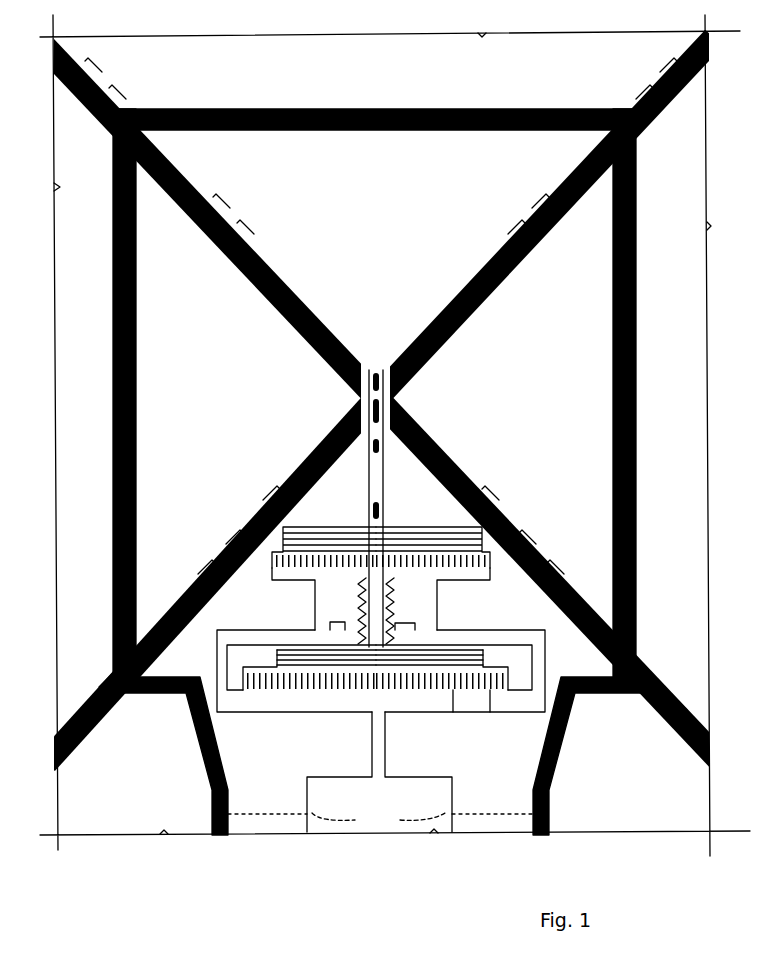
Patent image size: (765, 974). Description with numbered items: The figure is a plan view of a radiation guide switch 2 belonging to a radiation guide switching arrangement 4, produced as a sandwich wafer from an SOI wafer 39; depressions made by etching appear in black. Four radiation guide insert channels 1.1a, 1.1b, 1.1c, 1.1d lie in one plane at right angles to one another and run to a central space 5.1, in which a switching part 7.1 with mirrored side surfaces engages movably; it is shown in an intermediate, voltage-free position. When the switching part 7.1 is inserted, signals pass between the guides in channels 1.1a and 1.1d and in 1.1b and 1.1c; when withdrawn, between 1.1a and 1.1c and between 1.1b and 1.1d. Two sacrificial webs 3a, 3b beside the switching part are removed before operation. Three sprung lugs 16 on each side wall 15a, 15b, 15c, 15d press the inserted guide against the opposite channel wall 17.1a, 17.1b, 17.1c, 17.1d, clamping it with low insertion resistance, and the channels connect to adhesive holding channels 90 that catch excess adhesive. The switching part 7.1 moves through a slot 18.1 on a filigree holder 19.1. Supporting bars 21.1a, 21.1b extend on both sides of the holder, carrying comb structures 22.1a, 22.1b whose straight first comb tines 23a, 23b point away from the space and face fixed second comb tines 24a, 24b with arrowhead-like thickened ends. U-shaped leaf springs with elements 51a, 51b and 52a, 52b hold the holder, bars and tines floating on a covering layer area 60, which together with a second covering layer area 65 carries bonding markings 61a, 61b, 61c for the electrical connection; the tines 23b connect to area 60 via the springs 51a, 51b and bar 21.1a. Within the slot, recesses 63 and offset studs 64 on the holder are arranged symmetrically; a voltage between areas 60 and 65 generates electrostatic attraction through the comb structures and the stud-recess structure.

The radiation guide switch 2 is at (518, 104).
The radiation guide switching arrangement 4 is at (576, 838).
The adhesive holding channels 90 is at (565, 748).
The side wall 15a is at (170, 620).
The side wall 15b is at (588, 620).
The side wall 15c is at (566, 168).
The side wall 15d is at (197, 188).
The opposite channel wall 17.1a is at (203, 607).
The opposite channel wall 17.1b is at (550, 607).
The opposite channel wall 17.1c is at (518, 250).
The opposite channel wall 17.1d is at (205, 228).
The radiation guide insert channel 1.1a is at (211, 581).
The radiation guide insert channel 1.1b is at (549, 580).
The radiation guide insert channel 1.1c is at (545, 218).
The radiation guide insert channel 1.1d is at (210, 221).
The sacrificial web 3a is at (368, 369).
The sacrificial web 3b is at (384, 369).
The switching part 7.1 is at (375, 366).
The central space 5.1 is at (356, 397).
The SOI wafer 39 is at (214, 392).
The slot 18.1 is at (368, 430).
The holder 19.1 is at (383, 518).
The sprung lugs 16 is at (258, 493).
The leaf spring element 51a is at (343, 526).
The leaf spring element 51b is at (413, 526).
The first comb tines 23b is at (271, 560).
The second comb tines 24b is at (338, 568).
The supporting bar 21.1a is at (480, 566).
The covering layer area 60 is at (303, 624).
The recesses 63 is at (371, 602).
The studs 64 is at (389, 590).
The comb structure 22.1b is at (410, 610).
The first comb tines 23a is at (245, 680).
The supporting bar 21.1b is at (516, 672).
The leaf spring element 52a is at (304, 692).
The leaf spring element 52b is at (410, 692).
The second comb tines 24a is at (461, 715).
The comb structure 22.1a is at (518, 715).
The covering layer area 65 is at (395, 804).
The bonding marking 61a is at (306, 812).
The bonding marking 61b is at (378, 823).
The bonding marking 61c is at (530, 810).